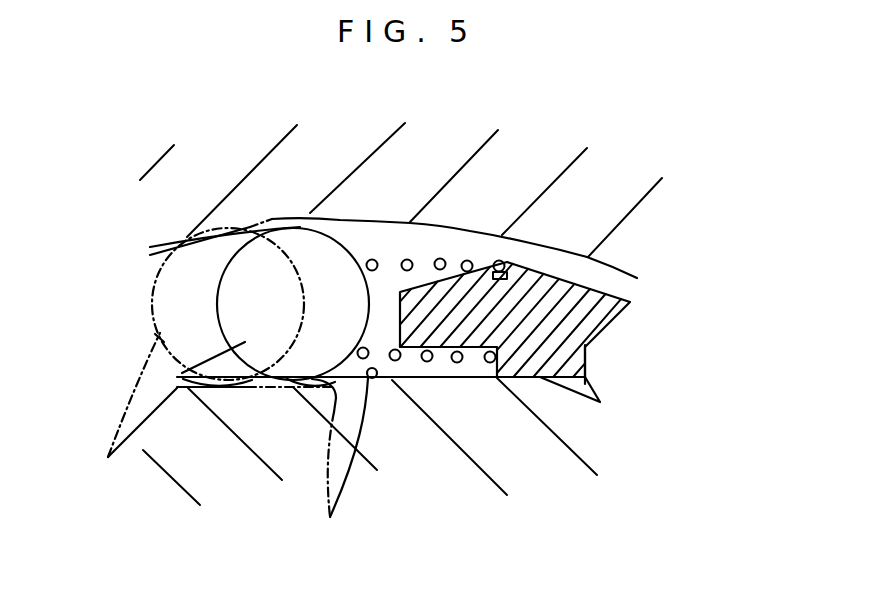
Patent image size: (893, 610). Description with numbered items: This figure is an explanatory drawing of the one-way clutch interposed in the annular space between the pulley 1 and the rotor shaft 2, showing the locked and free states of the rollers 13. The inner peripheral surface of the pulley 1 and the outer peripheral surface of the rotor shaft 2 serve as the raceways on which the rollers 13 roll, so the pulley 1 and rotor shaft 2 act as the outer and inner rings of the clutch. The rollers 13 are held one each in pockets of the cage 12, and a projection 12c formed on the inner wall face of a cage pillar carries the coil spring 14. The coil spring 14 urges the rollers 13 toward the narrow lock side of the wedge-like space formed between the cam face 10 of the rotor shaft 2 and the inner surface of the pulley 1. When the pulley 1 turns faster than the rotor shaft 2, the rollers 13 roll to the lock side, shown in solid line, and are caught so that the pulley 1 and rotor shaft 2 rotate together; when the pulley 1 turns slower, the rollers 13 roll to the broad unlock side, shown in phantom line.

The pulley 1 is at (598, 221).
The rotor shaft 2 is at (550, 462).
The cam face 10 is at (344, 463).
The cage 12 is at (617, 297).
The projection 12c is at (463, 322).
The rollers 13 is at (224, 360).
The coil spring 14 is at (441, 259).